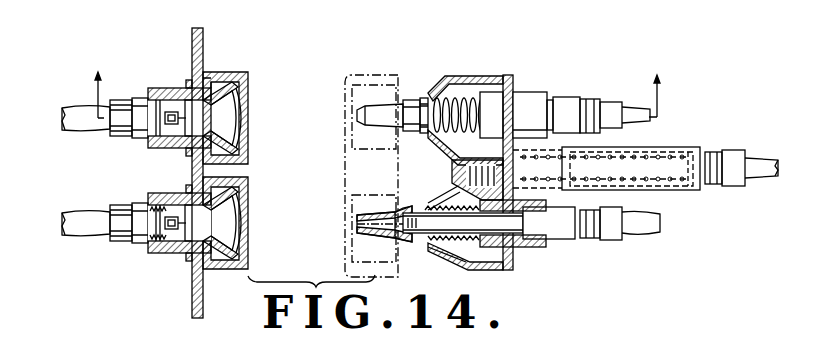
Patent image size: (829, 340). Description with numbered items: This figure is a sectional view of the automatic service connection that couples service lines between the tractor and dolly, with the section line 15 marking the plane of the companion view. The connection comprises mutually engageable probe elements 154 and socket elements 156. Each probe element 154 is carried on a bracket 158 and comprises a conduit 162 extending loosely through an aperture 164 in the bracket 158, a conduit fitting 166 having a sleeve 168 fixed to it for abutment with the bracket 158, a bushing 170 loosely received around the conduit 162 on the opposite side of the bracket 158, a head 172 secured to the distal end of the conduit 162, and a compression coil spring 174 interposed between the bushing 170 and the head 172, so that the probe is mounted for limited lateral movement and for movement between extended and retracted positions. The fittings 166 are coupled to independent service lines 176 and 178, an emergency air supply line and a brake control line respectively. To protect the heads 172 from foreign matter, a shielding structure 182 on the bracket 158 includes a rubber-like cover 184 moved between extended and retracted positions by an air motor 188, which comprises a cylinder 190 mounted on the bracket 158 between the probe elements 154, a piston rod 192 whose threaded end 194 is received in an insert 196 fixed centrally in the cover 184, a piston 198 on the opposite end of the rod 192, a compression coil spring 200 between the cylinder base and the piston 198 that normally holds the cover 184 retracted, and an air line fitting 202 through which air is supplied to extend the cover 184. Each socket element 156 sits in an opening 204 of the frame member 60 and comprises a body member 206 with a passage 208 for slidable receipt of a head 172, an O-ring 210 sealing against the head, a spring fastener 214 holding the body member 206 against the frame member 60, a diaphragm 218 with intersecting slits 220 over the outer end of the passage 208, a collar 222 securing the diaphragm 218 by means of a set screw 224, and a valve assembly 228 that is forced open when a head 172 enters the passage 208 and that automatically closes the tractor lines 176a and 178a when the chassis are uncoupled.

The section line for FIG. 15 is at (379, 81).
The frame member 60 is at (195, 40).
The probe element 154 is at (373, 98).
The socket element 156 is at (266, 80).
The bracket 158 is at (510, 81).
The conduit 162 is at (512, 222).
The aperture 164 is at (513, 250).
The conduit fitting 166 is at (563, 100).
The sleeve 168 is at (541, 93).
The bushing 170 is at (484, 90).
The head 172 is at (358, 217).
The compression coil spring 174 is at (448, 250).
The service line 176 is at (635, 102).
The service line 176a is at (68, 104).
The service line 178 is at (660, 240).
The service line 178a is at (78, 238).
The shielding structure 182 is at (458, 73).
The cover 184 is at (468, 268).
The air motor 188 is at (660, 146).
The cylinder 190 is at (589, 239).
The piston rod 192 is at (661, 178).
The threaded end 194 is at (461, 182).
The insert 196 is at (455, 170).
The piston 198 is at (695, 150).
The compression coil spring 200 is at (637, 182).
The air line fitting 202 is at (721, 187).
The opening 204 is at (190, 262).
The body member 206 is at (168, 111).
The passage 208 is at (172, 246).
The O-ring 210 is at (188, 207).
The spring fastener 214 is at (188, 152).
The diaphragm 218 is at (246, 100).
The intersecting slits 220 is at (244, 121).
The collar 222 is at (283, 63).
The set screw 224 is at (221, 78).
The valve assembly 228 is at (150, 212).